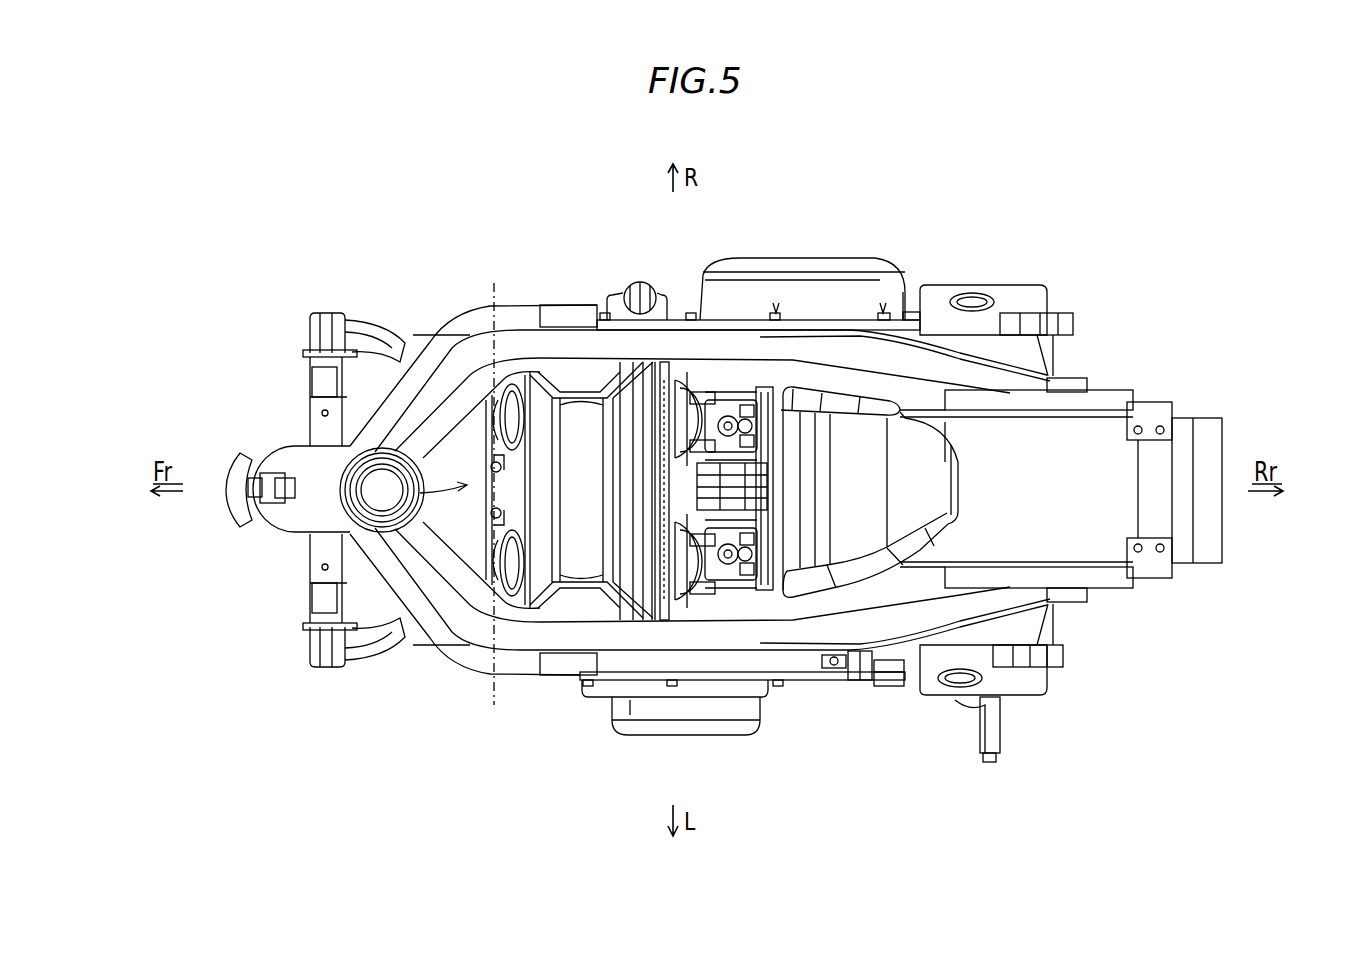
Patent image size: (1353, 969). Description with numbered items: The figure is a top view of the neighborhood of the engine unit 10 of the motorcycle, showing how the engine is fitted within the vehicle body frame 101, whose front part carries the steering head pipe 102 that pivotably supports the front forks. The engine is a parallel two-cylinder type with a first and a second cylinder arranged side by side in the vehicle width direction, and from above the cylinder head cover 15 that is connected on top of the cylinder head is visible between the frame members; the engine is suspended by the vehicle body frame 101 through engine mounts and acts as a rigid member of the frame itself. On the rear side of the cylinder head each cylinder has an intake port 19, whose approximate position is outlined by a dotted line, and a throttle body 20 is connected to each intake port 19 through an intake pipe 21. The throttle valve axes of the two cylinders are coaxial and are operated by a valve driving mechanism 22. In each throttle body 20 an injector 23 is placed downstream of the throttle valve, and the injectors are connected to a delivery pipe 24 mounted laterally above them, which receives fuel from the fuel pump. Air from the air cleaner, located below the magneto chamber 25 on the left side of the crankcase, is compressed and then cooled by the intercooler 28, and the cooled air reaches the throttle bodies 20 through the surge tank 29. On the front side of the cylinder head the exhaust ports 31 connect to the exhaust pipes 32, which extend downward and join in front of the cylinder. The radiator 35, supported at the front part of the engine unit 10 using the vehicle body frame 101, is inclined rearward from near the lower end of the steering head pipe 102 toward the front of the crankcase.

The engine unit 10 is at (366, 449).
The vehicle body frame 101 is at (445, 355).
The steering head pipe 102 is at (318, 508).
The cylinder head cover 15 is at (580, 513).
The intake port 19 is at (666, 366).
The throttle body 20 is at (762, 410).
The intake pipe 21 is at (693, 385).
The valve driving mechanism 22 is at (780, 400).
The injector 23 is at (745, 398).
The delivery pipe 24 is at (775, 593).
The magneto chamber 25 is at (627, 703).
The intercooler 28 is at (1047, 463).
The surge tank 29 is at (857, 482).
The exhaust port 31 is at (492, 492).
The exhaust pipe 32 is at (488, 405).
The radiator 35 is at (323, 378).